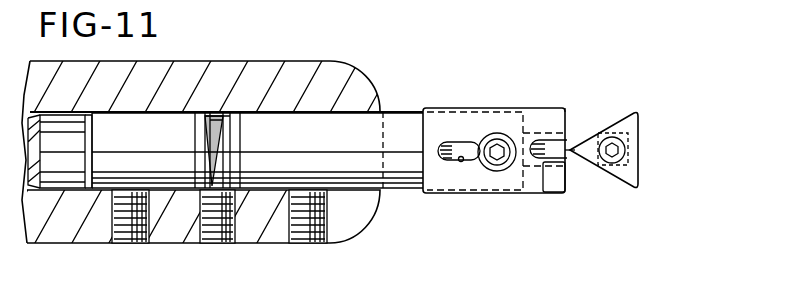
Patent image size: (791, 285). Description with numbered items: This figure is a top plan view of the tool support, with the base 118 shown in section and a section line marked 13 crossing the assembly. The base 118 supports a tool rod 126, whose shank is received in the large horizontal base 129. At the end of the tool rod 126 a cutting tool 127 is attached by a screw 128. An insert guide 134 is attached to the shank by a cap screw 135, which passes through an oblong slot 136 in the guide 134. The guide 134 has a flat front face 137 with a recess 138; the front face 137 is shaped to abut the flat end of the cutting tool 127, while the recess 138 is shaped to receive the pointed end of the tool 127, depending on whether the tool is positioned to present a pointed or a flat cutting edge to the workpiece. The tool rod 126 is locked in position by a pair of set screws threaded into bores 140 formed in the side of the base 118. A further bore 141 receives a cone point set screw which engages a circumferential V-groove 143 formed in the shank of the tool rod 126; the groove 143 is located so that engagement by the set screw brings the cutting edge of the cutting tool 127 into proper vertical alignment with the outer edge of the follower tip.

The base 118 is at (266, 61).
The circumferential V-groove 143 is at (233, 138).
The large horizontal base 129 is at (65, 184).
The bore 141 is at (212, 234).
The bores 140 is at (128, 238).
The tool rod 126 is at (410, 107).
The oblong slot 136 is at (462, 160).
The cap screw 135 is at (500, 160).
The recess 138 is at (543, 193).
The insert guide 134 is at (552, 170).
The cutting tool 127 is at (630, 177).
The screw 128 is at (623, 148).
The flat front face 137 is at (565, 108).
The section line 13- 13 is at (420, 150).